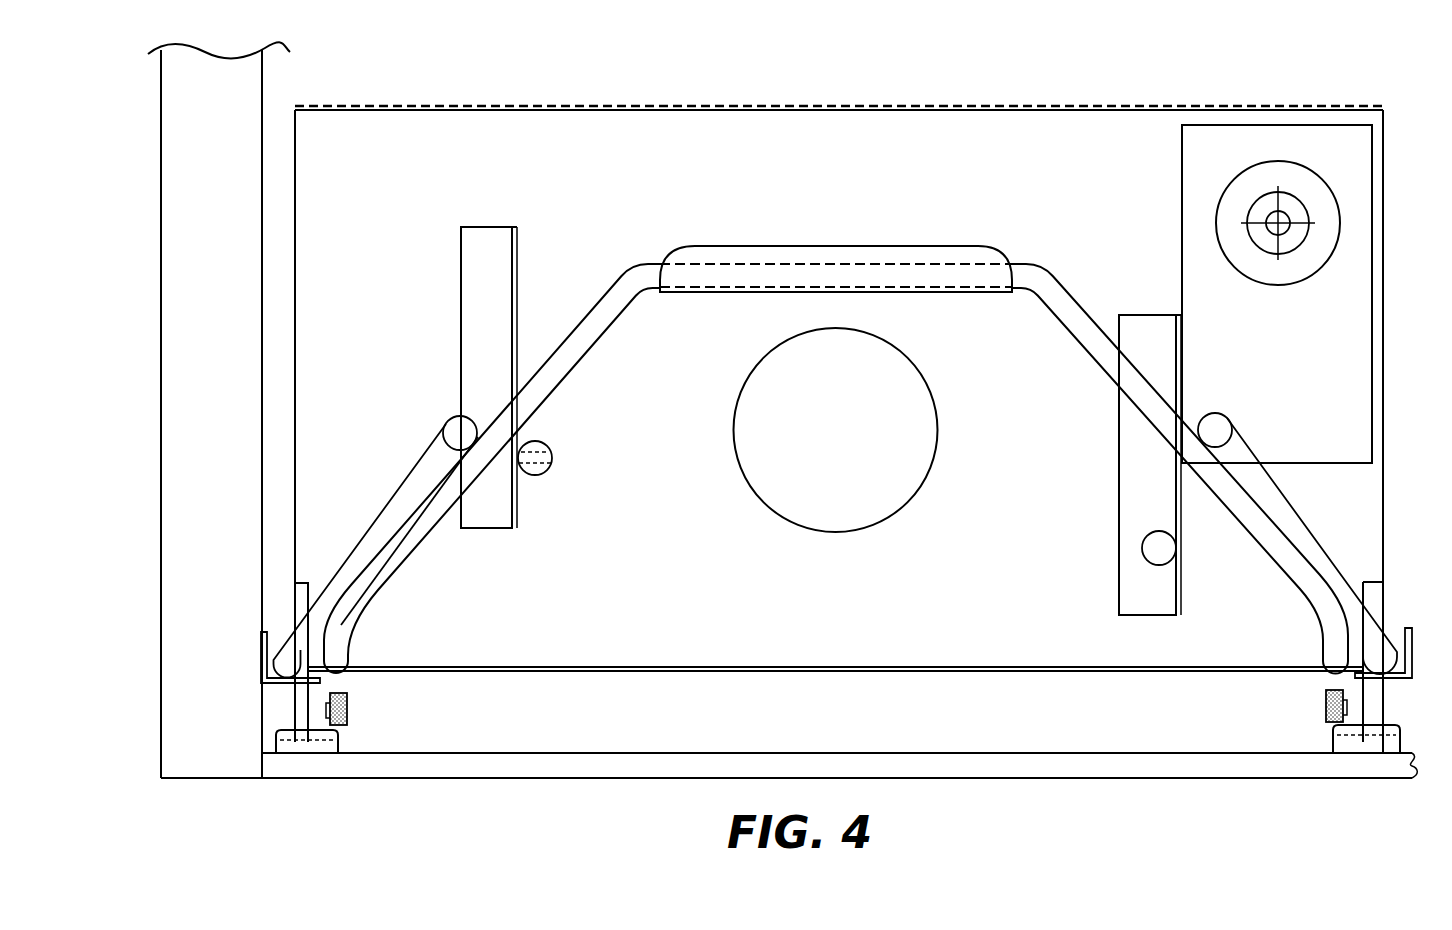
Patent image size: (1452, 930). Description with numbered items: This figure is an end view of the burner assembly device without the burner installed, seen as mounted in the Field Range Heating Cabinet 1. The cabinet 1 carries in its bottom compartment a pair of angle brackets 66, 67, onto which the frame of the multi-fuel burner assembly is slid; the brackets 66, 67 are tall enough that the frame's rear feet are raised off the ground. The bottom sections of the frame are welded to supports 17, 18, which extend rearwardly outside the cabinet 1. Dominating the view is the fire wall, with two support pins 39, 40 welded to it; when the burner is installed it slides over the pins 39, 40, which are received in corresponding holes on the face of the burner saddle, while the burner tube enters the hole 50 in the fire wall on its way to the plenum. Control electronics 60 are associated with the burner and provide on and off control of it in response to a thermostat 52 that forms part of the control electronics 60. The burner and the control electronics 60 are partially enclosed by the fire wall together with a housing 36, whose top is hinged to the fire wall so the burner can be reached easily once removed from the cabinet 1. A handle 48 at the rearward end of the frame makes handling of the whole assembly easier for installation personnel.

The M-59 Field Range Heating Cabinet 1 is at (163, 589).
The support 17 is at (338, 745).
The support 18 is at (1333, 740).
The housing 36 is at (295, 308).
The support pin 39 is at (546, 470).
The support pin 40 is at (1142, 548).
The handle 48 is at (1060, 272).
The hole 50 is at (760, 500).
The thermostat 52 is at (1236, 270).
The control electronics 60 is at (1298, 386).
The angle bracket 66 is at (262, 682).
The angle bracket 67 is at (1408, 678).